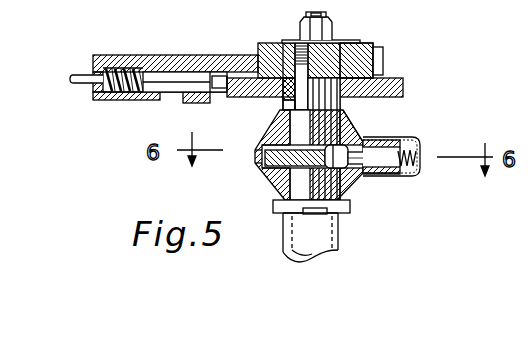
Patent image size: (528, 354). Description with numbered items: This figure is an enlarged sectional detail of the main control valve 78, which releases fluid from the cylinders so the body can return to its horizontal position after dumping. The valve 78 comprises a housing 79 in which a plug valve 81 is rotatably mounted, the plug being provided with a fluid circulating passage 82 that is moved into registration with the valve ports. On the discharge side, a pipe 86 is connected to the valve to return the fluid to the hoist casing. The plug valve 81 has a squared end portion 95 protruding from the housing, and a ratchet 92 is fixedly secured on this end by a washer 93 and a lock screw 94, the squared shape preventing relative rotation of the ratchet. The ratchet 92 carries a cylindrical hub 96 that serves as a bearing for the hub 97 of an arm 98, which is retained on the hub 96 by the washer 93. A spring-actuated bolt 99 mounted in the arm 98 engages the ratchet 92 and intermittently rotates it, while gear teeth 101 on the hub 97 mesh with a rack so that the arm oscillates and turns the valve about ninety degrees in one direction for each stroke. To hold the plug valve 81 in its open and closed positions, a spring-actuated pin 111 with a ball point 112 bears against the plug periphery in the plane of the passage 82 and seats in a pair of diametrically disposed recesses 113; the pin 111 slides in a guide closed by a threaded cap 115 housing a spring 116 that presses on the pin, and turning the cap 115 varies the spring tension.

The main valve 78 is at (356, 193).
The housing 79 is at (355, 130).
The plug valve 81 is at (285, 196).
The fluid circulating passage 82 is at (288, 150).
The pipe 86 is at (323, 249).
The ratchet 92 is at (404, 90).
The washer 93 is at (340, 44).
The lock screw 94 is at (332, 33).
The end portion 95 is at (297, 83).
The cylindrical hub 96 is at (384, 64).
The hub 97 is at (260, 45).
The arm 98 is at (146, 55).
The spring-actuated bolt 99 is at (180, 93).
The gear teeth 101 is at (385, 58).
The spring-actuated pin 111 is at (393, 176).
The ball point 112 is at (292, 168).
The recesses 113 is at (257, 160).
The cap 115 is at (418, 158).
The spring 116 is at (407, 139).